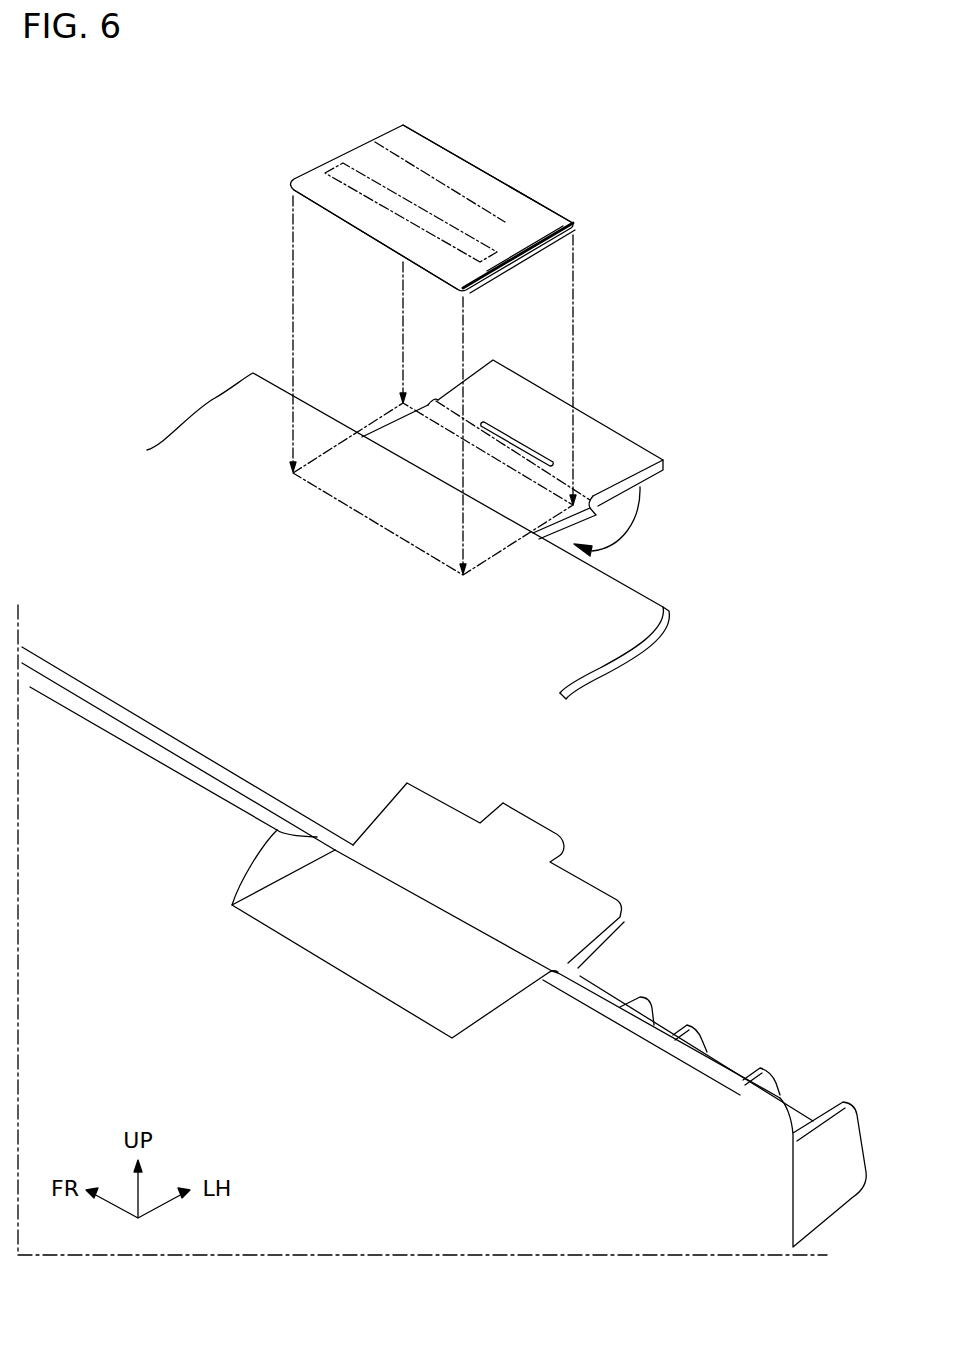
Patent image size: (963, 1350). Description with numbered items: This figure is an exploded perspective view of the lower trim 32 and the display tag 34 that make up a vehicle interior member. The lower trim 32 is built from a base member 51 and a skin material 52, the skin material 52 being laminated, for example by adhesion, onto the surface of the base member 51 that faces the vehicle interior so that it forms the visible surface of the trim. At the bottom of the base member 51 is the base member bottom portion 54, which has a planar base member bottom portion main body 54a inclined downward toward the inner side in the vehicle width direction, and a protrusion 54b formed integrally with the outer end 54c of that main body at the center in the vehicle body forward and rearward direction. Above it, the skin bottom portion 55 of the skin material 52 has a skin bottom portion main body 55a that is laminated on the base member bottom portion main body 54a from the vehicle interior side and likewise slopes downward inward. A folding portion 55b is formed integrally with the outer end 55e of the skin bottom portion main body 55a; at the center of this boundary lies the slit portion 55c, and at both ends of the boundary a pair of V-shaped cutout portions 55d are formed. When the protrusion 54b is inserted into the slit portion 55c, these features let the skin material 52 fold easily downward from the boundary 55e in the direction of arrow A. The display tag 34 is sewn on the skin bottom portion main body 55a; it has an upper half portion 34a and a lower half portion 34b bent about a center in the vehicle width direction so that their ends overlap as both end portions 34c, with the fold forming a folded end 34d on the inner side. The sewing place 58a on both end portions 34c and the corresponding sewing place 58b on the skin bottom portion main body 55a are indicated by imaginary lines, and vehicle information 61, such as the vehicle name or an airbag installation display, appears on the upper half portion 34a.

The lower trim 32 is at (178, 210).
The display tag 34 is at (648, 210).
The upper half portion 34a is at (500, 238).
The lower half portion 34b is at (487, 270).
The both end portions 34c is at (440, 155).
The folded end 34d is at (350, 215).
The sewing place 58a is at (395, 150).
The vehicle information 61 is at (335, 165).
The skin material 52 is at (235, 419).
The sewing place 58b is at (415, 468).
The skin bottom portion 55 is at (763, 487).
The skin bottom portion main body 55a is at (480, 542).
The folding portion 55b is at (660, 473).
The slit portion 55c is at (530, 450).
The cutout portions 55d is at (435, 402).
The outer end 55e is at (578, 487).
The arrow A is at (630, 530).
The base member 51 is at (70, 676).
The base member bottom portion 54 is at (703, 815).
The base member bottom portion main body 54a is at (488, 913).
The protrusion 54b is at (548, 837).
The outer end 54c is at (440, 793).